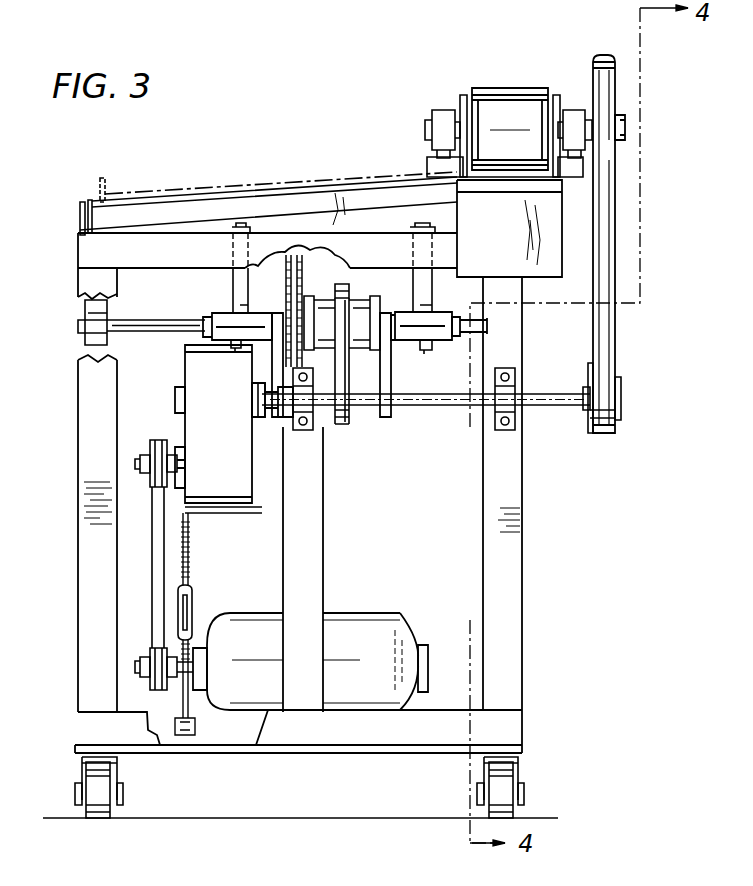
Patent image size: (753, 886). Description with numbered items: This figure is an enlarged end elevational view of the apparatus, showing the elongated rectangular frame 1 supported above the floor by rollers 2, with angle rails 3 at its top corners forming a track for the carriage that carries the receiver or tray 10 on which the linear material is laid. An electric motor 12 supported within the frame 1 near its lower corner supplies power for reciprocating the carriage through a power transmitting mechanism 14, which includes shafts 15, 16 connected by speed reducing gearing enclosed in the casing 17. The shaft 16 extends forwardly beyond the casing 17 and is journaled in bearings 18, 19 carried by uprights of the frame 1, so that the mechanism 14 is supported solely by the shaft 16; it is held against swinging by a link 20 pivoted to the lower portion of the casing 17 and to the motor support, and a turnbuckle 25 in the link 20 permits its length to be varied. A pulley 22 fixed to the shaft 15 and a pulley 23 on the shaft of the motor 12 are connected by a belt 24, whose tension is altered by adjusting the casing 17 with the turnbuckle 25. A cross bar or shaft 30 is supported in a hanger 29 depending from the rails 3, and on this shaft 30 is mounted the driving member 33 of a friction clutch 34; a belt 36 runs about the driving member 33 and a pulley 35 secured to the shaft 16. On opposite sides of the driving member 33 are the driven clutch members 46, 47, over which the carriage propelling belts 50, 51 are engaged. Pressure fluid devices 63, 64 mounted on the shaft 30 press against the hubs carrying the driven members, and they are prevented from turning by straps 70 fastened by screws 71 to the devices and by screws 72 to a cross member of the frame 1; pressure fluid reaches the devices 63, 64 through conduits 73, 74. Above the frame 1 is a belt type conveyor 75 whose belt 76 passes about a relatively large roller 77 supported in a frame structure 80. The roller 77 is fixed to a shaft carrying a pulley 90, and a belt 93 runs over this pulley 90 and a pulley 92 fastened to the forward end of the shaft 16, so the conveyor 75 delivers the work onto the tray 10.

The frame 1 is at (524, 602).
The rollers 2 is at (505, 782).
The angle rails 3 is at (80, 222).
The receiver or tray 10 is at (106, 188).
The electric motor 12 is at (357, 622).
The power transmitting mechanism 14 is at (222, 519).
The shaft 15 is at (143, 468).
The shaft 16 is at (422, 408).
The casing 17 is at (193, 370).
The bearing 18 is at (305, 405).
The bearing 19 is at (505, 410).
The link 20 is at (188, 573).
The pulley 22 is at (152, 442).
The pulley 23 is at (150, 686).
The belt 24 is at (153, 582).
The turnbuckle 25 is at (197, 608).
The hanger 29 is at (90, 338).
The cross bar or shaft 30 is at (148, 322).
The driving member 33 is at (347, 292).
The clutch 34 is at (325, 288).
The pulley 35 is at (343, 424).
The belt 36 is at (342, 372).
The driven clutch member 46 is at (375, 345).
The driven clutch member 47 is at (284, 272).
The carriage propelling belt 50 is at (372, 350).
The carriage propelling belt 51 is at (306, 294).
The pressure fluid device 63 is at (435, 318).
The pressure fluid device 64 is at (217, 313).
The straps 70 is at (240, 296).
The screws 71 is at (238, 312).
The screws 72 is at (244, 227).
The conduit 73 is at (430, 347).
The conduit 74 is at (236, 348).
The belt type conveyor 75 is at (509, 88).
The conveyor belt 76 is at (530, 87).
The roller 77 is at (552, 92).
The frame structure 80 is at (462, 92).
The pulley 90 is at (614, 63).
The pulley 92 is at (612, 368).
The belt 93 is at (606, 230).